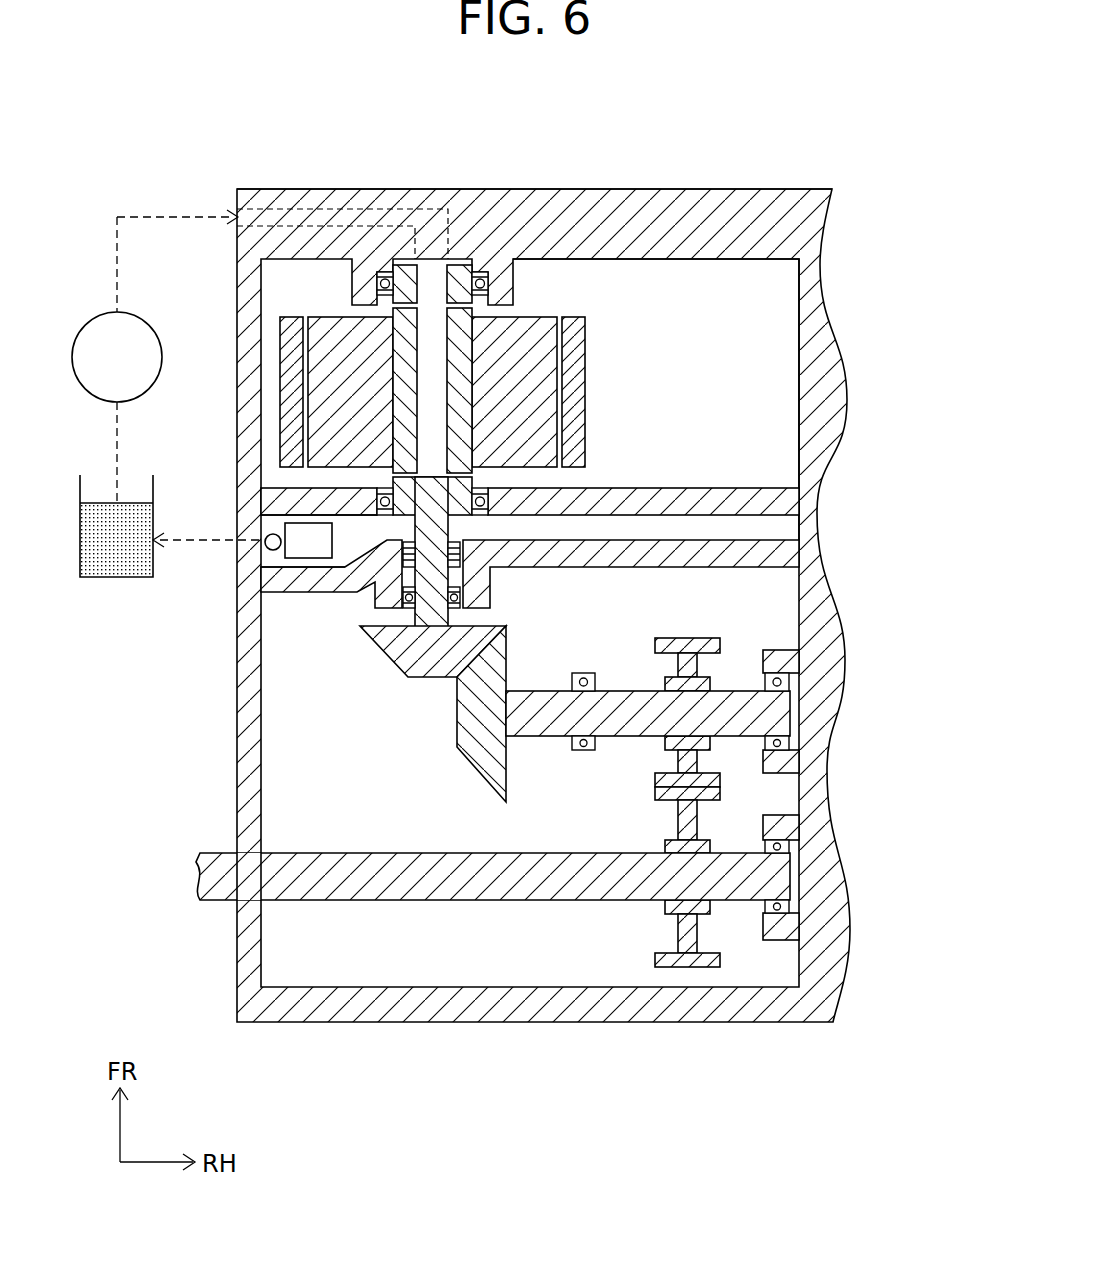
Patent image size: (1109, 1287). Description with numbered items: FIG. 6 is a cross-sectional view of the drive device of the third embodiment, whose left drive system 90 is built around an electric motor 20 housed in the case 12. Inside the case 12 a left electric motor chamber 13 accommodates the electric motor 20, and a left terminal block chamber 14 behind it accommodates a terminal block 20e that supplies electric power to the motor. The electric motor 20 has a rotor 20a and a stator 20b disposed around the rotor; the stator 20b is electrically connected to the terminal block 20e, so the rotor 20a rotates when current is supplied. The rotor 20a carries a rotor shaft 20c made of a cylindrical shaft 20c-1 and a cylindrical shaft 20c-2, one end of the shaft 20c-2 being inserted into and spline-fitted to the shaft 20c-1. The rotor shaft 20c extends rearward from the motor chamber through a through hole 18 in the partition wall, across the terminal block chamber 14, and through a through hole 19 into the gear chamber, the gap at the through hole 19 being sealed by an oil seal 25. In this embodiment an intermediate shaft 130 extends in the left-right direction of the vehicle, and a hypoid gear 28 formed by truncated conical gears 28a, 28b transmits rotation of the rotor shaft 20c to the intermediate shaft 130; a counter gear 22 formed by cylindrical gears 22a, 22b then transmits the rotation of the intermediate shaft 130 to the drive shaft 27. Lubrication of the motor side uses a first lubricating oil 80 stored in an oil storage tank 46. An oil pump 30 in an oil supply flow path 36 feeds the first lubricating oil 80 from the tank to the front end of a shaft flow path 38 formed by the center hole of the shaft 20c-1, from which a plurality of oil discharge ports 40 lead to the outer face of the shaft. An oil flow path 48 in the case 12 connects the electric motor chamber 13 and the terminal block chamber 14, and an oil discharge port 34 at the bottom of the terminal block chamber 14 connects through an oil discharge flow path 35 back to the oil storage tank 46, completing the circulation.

The case 12 is at (780, 1007).
The left electric motor chamber 13 is at (732, 293).
The left terminal block chamber 14 is at (330, 498).
The through hole 18 is at (384, 482).
The through hole 19 is at (404, 616).
The electric motor 20 is at (582, 292).
The rotor 20a is at (520, 330).
The stator 20b is at (573, 345).
The rotor shaft 20c is at (691, 395).
The shaft 20c-1 is at (470, 400).
The shaft 20c-2 is at (440, 524).
The terminal block 20e is at (343, 520).
The counter gear 22 is at (807, 802).
The gear 22a is at (687, 767).
The gear 22b is at (690, 820).
The oil seal 25 is at (401, 603).
The drive shaft 27 is at (448, 890).
The hypoid gear 28 is at (296, 718).
The gear 28a is at (428, 668).
The gear 28b is at (483, 745).
The oil pump 30 is at (104, 318).
The oil discharge port 34 is at (300, 524).
The oil discharge flow path 35 is at (183, 550).
The oil supply flow path 36 is at (143, 215).
The shaft flow path 38 is at (430, 330).
The oil discharge ports 40 is at (462, 272).
The oil storage tank 46 is at (114, 568).
The oil flow path 48 is at (340, 445).
The first lubricating oil 80 is at (117, 578).
The left drive system 90 is at (836, 155).
The intermediate shaft 130 is at (727, 703).